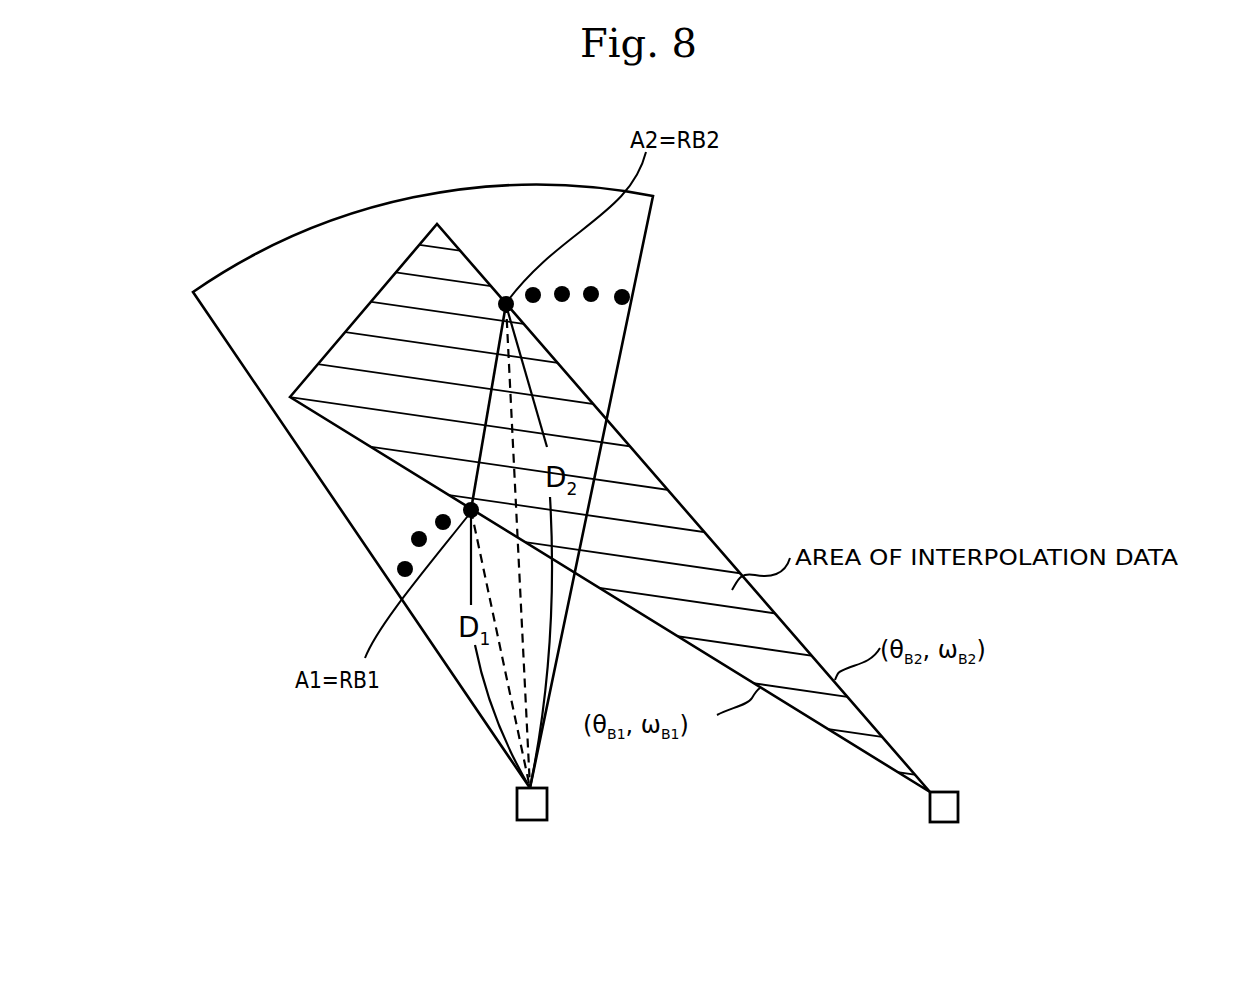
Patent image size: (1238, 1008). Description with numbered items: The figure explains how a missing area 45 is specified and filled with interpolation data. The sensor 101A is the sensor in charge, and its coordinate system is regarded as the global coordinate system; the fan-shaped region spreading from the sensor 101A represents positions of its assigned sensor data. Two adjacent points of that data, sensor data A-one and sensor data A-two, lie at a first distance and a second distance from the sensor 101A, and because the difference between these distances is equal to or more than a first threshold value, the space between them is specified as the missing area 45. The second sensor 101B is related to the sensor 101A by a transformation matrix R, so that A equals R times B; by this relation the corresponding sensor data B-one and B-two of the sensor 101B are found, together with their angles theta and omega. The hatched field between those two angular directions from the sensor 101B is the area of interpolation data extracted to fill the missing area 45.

The missing area 45 is at (495, 383).
The sensor 101A is at (535, 820).
The sensor 101B is at (940, 822).